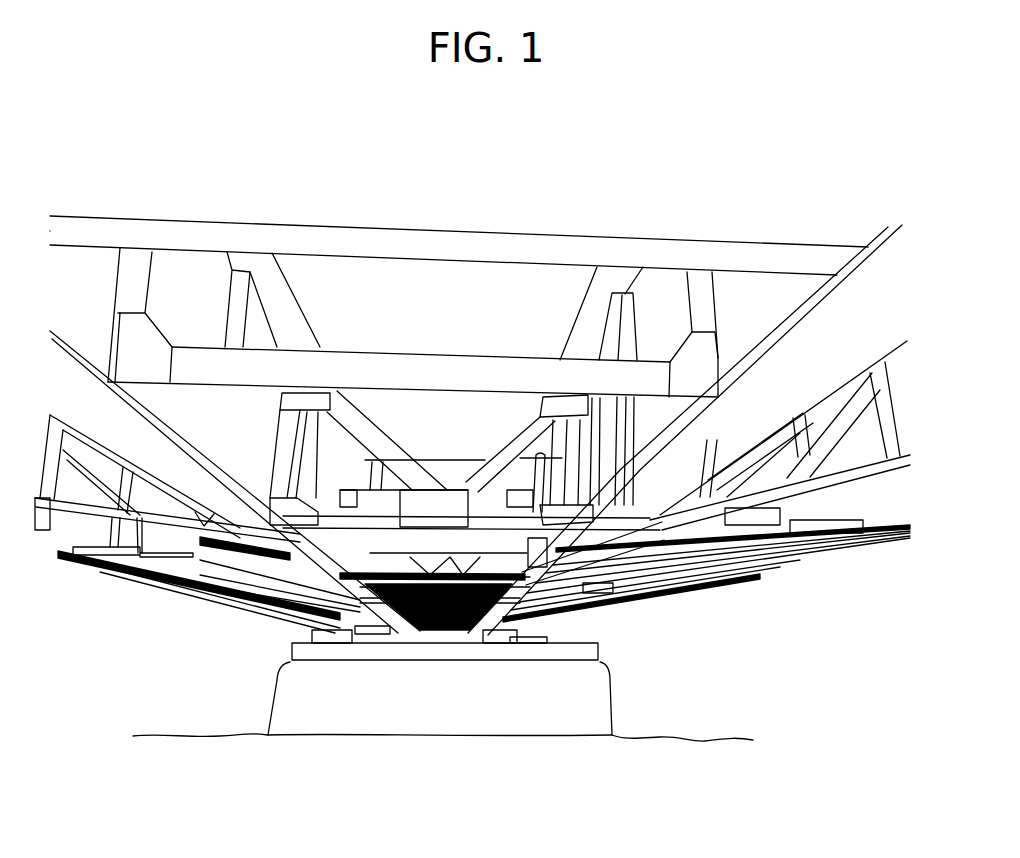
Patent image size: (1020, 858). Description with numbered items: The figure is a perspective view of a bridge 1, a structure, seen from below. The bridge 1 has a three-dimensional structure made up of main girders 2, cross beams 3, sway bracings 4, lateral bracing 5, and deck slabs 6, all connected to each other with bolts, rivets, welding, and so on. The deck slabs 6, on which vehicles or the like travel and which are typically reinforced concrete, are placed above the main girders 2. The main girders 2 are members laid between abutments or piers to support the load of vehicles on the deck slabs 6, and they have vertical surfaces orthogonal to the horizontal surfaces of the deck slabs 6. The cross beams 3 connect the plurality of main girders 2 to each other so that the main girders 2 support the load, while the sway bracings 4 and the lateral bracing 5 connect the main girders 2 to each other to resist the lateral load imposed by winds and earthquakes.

The bridge 1 is at (583, 197).
The main girders 2 is at (167, 463).
The cross beams 3 is at (197, 365).
The sway bracings 4 is at (372, 455).
The lateral bracing 5 is at (763, 490).
The deck slabs 6 is at (324, 274).